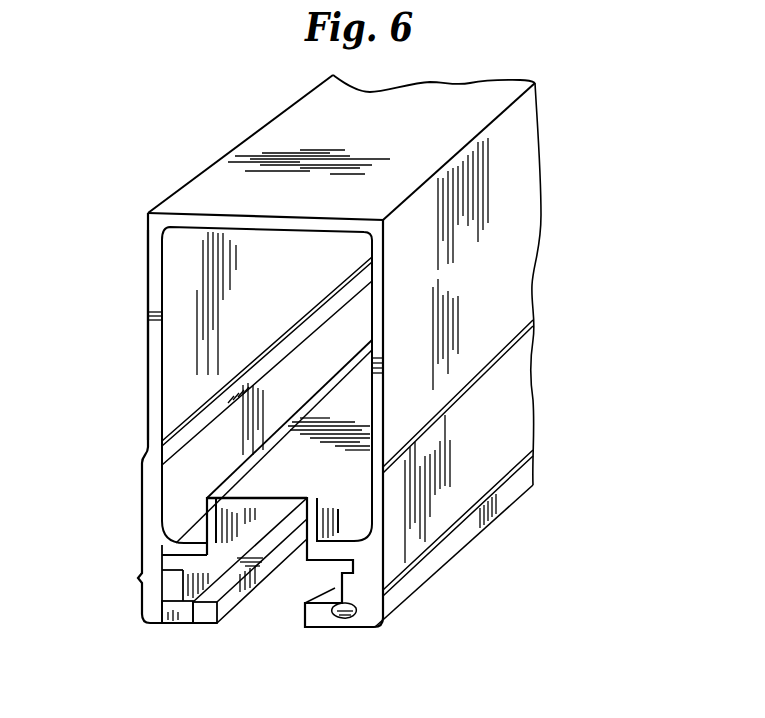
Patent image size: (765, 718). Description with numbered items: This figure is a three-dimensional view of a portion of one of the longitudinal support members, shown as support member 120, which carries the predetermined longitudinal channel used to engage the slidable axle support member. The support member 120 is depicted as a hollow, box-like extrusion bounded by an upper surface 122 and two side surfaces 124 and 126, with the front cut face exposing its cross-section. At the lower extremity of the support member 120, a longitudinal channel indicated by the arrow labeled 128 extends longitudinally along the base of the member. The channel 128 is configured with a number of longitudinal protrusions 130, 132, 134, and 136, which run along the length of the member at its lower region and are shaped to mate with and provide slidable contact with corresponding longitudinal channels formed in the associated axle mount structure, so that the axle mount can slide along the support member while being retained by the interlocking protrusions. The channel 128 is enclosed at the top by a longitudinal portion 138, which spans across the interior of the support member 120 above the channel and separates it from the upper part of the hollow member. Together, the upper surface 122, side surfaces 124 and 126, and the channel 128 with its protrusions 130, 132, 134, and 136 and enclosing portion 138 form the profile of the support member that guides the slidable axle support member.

The support member 120 is at (552, 128).
The upper surface 122 is at (265, 151).
The side surface 124 is at (493, 298).
The side surface 126 is at (148, 313).
The longitudinal channel 128 is at (283, 591).
The longitudinal protrusion 130 is at (384, 600).
The longitudinal protrusion 132 is at (172, 581).
The longitudinal protrusion 134 is at (333, 613).
The longitudinal protrusion 136 is at (192, 621).
The longitudinal portion 138 is at (270, 468).